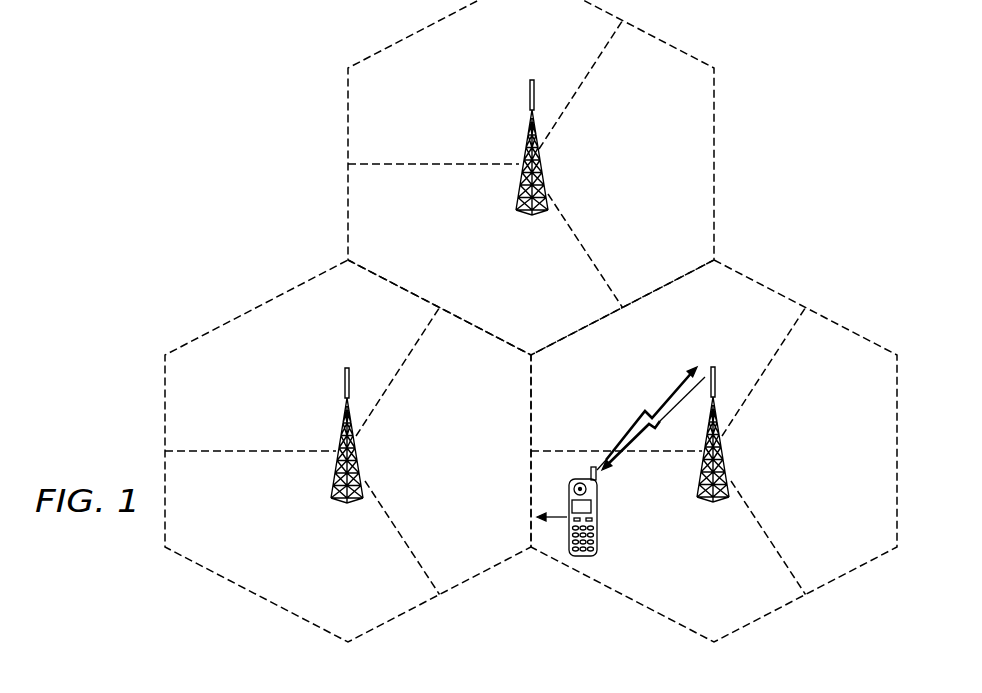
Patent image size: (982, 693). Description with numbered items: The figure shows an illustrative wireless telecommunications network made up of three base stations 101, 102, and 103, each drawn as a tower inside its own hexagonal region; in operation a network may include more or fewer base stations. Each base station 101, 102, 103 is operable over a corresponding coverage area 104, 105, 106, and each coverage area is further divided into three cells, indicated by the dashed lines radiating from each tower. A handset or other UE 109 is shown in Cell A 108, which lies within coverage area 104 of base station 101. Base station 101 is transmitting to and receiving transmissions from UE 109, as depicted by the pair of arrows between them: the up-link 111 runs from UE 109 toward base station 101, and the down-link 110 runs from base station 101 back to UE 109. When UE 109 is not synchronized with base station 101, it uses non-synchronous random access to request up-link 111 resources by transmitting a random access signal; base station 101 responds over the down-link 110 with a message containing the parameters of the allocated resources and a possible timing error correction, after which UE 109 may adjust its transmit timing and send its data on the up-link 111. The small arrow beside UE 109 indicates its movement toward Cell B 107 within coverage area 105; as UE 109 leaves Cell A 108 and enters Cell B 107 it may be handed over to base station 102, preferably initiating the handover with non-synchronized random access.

The base station 101 is at (727, 461).
The base station 102 is at (345, 416).
The base station 103 is at (527, 128).
The coverage area 104 is at (817, 589).
The coverage area 105 is at (241, 590).
The coverage area 106 is at (714, 141).
The Cell B 107 is at (348, 451).
The Cell A 108 is at (714, 451).
The UE 109 is at (598, 524).
The down-link 110 is at (633, 446).
The up-link 111 is at (656, 402).